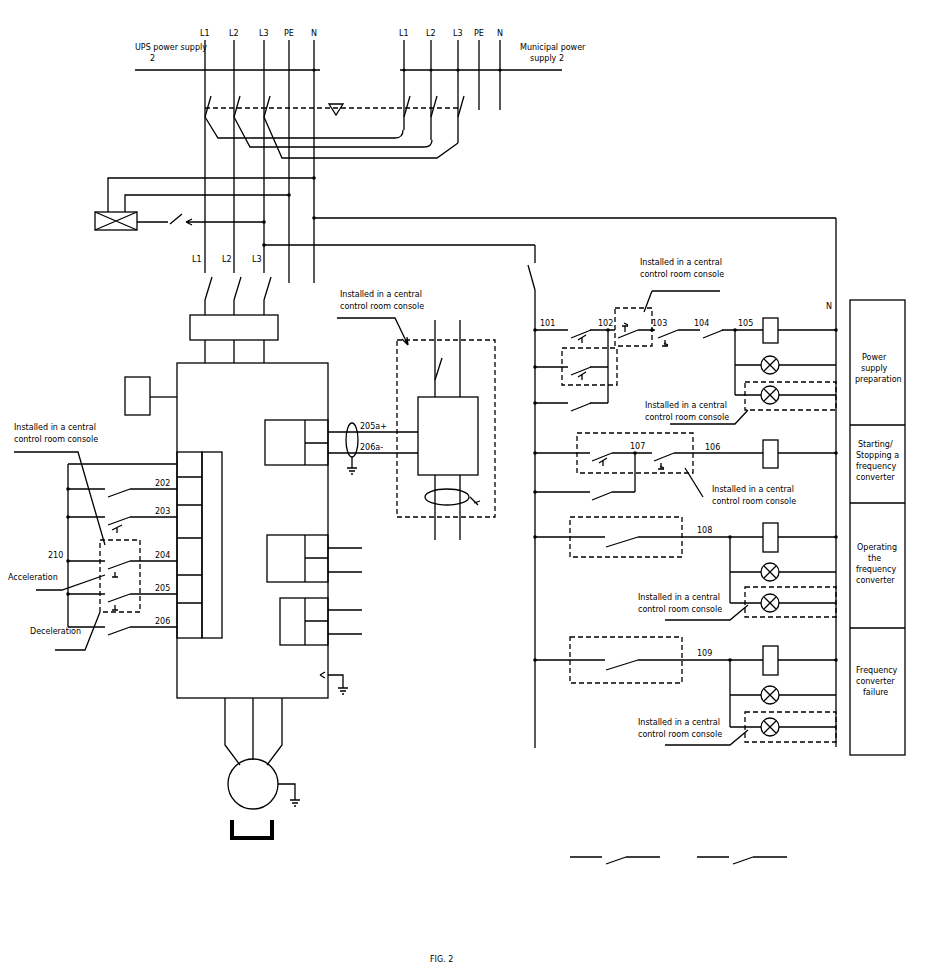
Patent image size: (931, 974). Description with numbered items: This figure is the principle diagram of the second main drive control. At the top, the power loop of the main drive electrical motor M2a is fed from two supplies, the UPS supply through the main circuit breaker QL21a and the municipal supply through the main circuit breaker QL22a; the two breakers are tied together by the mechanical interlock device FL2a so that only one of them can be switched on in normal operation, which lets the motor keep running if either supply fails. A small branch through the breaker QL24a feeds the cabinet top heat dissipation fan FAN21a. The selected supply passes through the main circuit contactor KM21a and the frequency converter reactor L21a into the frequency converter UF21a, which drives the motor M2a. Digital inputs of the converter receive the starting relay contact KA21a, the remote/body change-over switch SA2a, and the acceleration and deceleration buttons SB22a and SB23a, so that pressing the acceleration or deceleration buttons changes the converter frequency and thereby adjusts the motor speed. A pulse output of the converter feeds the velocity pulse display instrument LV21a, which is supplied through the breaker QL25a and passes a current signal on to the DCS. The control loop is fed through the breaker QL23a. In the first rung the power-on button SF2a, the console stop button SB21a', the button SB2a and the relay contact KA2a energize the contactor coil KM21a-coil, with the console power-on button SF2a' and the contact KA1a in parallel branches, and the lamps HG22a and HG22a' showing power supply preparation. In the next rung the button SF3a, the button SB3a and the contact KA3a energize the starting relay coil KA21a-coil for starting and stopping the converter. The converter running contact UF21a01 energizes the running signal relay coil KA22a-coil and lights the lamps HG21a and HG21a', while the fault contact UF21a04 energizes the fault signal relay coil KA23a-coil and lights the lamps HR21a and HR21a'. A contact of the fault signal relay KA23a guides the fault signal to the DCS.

The main circuit breaker QL21a is at (309, 127).
The main circuit breaker QL22a is at (334, 101).
The mechanical interlock device FL2a is at (335, 100).
The cabinet top heat dissipation fan FAN21a is at (105, 236).
The fan circuit breaker QL24a is at (200, 228).
The main circuit contactor KM21a is at (189, 346).
The frequency converter reactor L21a is at (234, 327).
The frequency converter UF21a is at (269, 530).
The frequency converter starting relay KA21a is at (122, 486).
The change-over switch for remote control/body control SA2a is at (120, 518).
The acceleration push button SB22a is at (121, 562).
The deceleration push button SB23a is at (121, 595).
The velocity pulse display instrument LV21a is at (450, 425).
The indicator supply breaker QL25a is at (421, 369).
The main drive electrical motor M2a is at (252, 784).
The control circuit breaker QL23a is at (549, 277).
The power-on manual operating button of the main circuit SF2a is at (579, 329).
The console stop button SB21a' is at (633, 327).
The start button SB2a is at (669, 329).
The relay contact KA2a is at (713, 326).
The main circuit contactor KM21a-coil is at (788, 330).
The power-on manual operating button of the main circuit SF2a' is at (589, 366).
The relay contact KA1a is at (579, 400).
The power ready lamp HG22a is at (787, 364).
The console power ready lamp HG22a' is at (790, 396).
The stop button SF3a is at (602, 452).
The start button SB3a is at (666, 451).
The relay contact KA3a is at (602, 489).
The frequency converter starting relay KA21a-coil is at (787, 454).
The frequency converter UF21a01 is at (626, 537).
The frequency converter running signal relay KA22a-coil is at (787, 537).
The running lamp HG21a is at (787, 571).
The console running lamp HG21a' is at (790, 602).
The frequency converter UF21a04 is at (626, 660).
The frequency converter fault signal relay KA23a-coil is at (787, 660).
The fault lamp HR21a is at (787, 694).
The console fault lamp HR21a' is at (790, 727).
The frequency converter fault signal relay KA23a is at (615, 869).